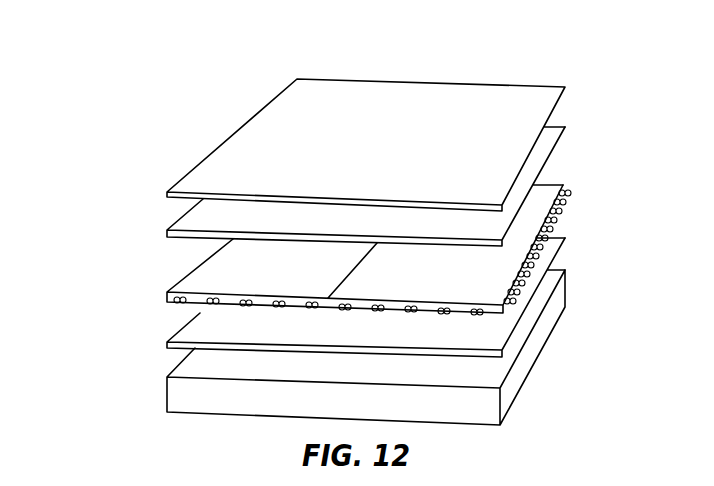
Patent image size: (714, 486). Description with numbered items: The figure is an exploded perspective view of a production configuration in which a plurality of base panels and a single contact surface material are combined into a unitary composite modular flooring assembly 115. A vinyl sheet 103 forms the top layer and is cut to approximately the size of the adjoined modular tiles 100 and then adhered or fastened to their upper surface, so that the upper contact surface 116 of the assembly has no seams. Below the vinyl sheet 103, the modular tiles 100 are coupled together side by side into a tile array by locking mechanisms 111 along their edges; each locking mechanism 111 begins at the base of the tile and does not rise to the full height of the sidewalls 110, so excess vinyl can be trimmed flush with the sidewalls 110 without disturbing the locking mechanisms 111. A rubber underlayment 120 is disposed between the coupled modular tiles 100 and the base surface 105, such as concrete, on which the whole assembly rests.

The modular tile 100 is at (555, 187).
The vinyl sheet 103 is at (533, 85).
The base surface 105 is at (545, 333).
The sidewalls 110 is at (187, 302).
The locking mechanism 111 is at (570, 194).
The modular flooring assembly 115 is at (188, 143).
The upper contact surface 116 is at (435, 100).
The rubber underlayment 120 is at (167, 344).